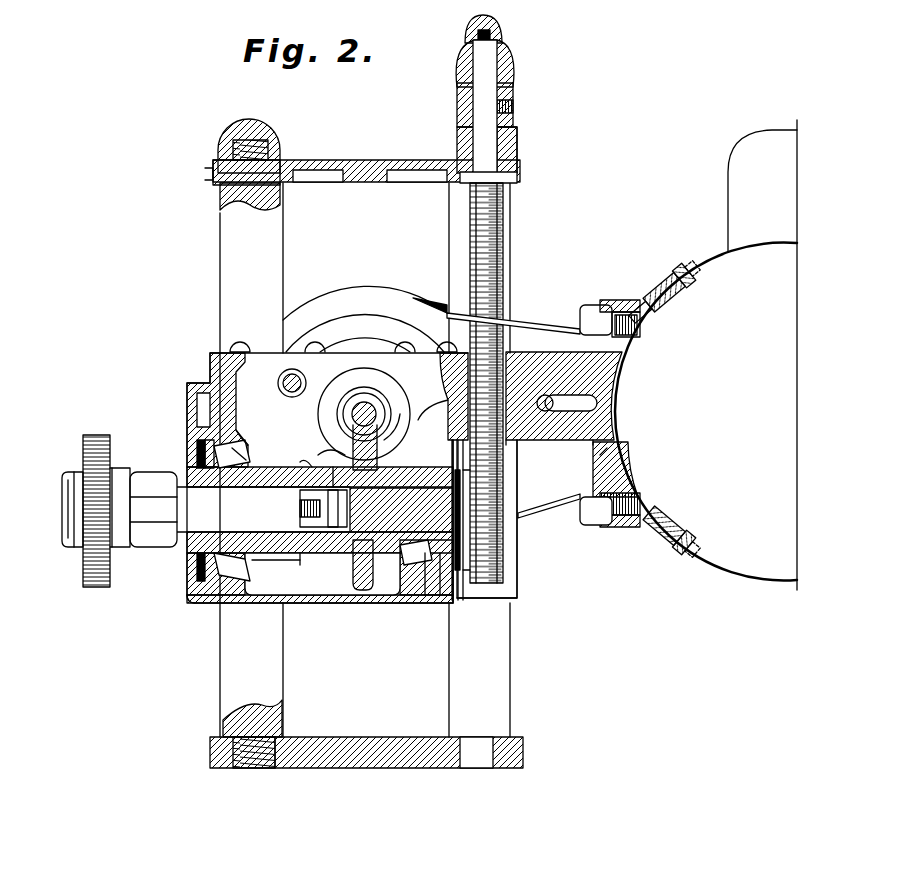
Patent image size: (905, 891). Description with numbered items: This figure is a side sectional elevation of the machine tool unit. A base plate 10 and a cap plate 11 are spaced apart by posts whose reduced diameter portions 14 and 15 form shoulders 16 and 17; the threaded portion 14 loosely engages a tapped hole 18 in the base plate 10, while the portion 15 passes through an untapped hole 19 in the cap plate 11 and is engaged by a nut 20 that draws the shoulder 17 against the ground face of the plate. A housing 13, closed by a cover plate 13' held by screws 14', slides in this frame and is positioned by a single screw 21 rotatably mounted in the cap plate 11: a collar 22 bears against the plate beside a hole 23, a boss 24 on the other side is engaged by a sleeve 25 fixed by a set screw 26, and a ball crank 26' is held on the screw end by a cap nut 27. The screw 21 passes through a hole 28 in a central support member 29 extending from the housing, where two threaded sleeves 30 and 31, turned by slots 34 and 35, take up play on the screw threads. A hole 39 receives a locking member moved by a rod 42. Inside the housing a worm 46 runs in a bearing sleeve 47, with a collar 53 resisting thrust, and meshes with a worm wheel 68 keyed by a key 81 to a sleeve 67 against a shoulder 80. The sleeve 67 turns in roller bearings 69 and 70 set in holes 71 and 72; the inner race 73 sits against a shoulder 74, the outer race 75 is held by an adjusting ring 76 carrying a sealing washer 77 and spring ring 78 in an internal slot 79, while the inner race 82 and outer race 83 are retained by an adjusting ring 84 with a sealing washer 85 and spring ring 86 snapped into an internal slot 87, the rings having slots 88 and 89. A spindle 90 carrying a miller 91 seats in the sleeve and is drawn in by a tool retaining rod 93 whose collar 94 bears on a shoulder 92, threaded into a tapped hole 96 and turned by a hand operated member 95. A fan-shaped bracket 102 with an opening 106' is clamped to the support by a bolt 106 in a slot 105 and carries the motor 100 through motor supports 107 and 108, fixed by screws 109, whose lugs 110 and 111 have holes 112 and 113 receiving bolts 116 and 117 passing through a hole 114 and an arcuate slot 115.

The base plate 10 is at (360, 745).
The cap plate 11 is at (382, 160).
The housing 13 is at (305, 489).
The cover plate 13' is at (365, 319).
The reduced diameter portion 14 is at (237, 768).
The screws 14' is at (250, 332).
The reduced diameter portion 15 is at (233, 150).
The shoulder 16 is at (223, 735).
The shoulder 17 is at (285, 188).
The tapped hole 18 is at (278, 770).
The hole 19 is at (208, 174).
The nut 20 is at (252, 122).
The screw 21 is at (470, 247).
The collar 22 is at (458, 185).
The hole 23 is at (517, 150).
The boss 24 is at (457, 142).
The sleeve 25 is at (457, 100).
The set screw 26 is at (524, 103).
The ball crank 26' is at (501, 63).
The cap nut 27 is at (500, 25).
The hole 28 is at (564, 386).
The central support member 29 is at (520, 442).
The sleeve 30 is at (448, 383).
The sleeve 31 is at (450, 413).
The slot 34 is at (452, 348).
The slot 35 is at (498, 519).
The hole 39 is at (278, 383).
The rod 42 is at (286, 392).
The worm 46 is at (378, 395).
The bearing sleeve 47 is at (343, 385).
The collar 53 is at (352, 414).
The sleeve 67 is at (296, 566).
The worm wheel 68 is at (321, 439).
The roller bearing 69 is at (240, 448).
The roller bearing 70 is at (377, 450).
The hole 71 is at (240, 436).
The hole 72 is at (397, 424).
The inner race 73 is at (275, 518).
The shoulder 74 is at (259, 452).
The outer race 75 is at (197, 445).
The adjusting ring 76 is at (197, 470).
The sealing washer 77 is at (178, 490).
The spring ring 78 is at (210, 575).
The internal slot 79 is at (192, 600).
The shoulder 80 is at (349, 565).
The key 81 is at (329, 467).
The inner race 82 is at (405, 498).
The outer race 83 is at (415, 598).
The adjusting ring 84 is at (487, 522).
The sealing washer 85 is at (465, 545).
The spring ring 86 is at (440, 598).
The housing wall 87 is at (456, 603).
The slot 88 is at (197, 566).
The slot 89 is at (470, 570).
The spindle 90 is at (276, 568).
The miller 91 is at (90, 590).
The shoulder 92 is at (340, 512).
The tool retaining rod 93 is at (410, 560).
The collar 94 is at (322, 574).
The hand operated member 95 is at (465, 520).
The tapped hole 96 is at (300, 458).
The motor 100 is at (750, 520).
The bracket 102 is at (620, 455).
The slot 105 is at (545, 394).
The bolt 106 is at (571, 447).
The opening 106' is at (583, 460).
The motor support 107 is at (638, 555).
The motor support 108 is at (645, 285).
The screws 109 is at (662, 262).
The lug 110 is at (614, 528).
The lug 111 is at (620, 300).
The hole 112 is at (640, 498).
The hole 113 is at (638, 328).
The hole 114 is at (588, 527).
The slot 115 is at (600, 305).
The bolt 116 is at (549, 499).
The bolt 117 is at (580, 315).